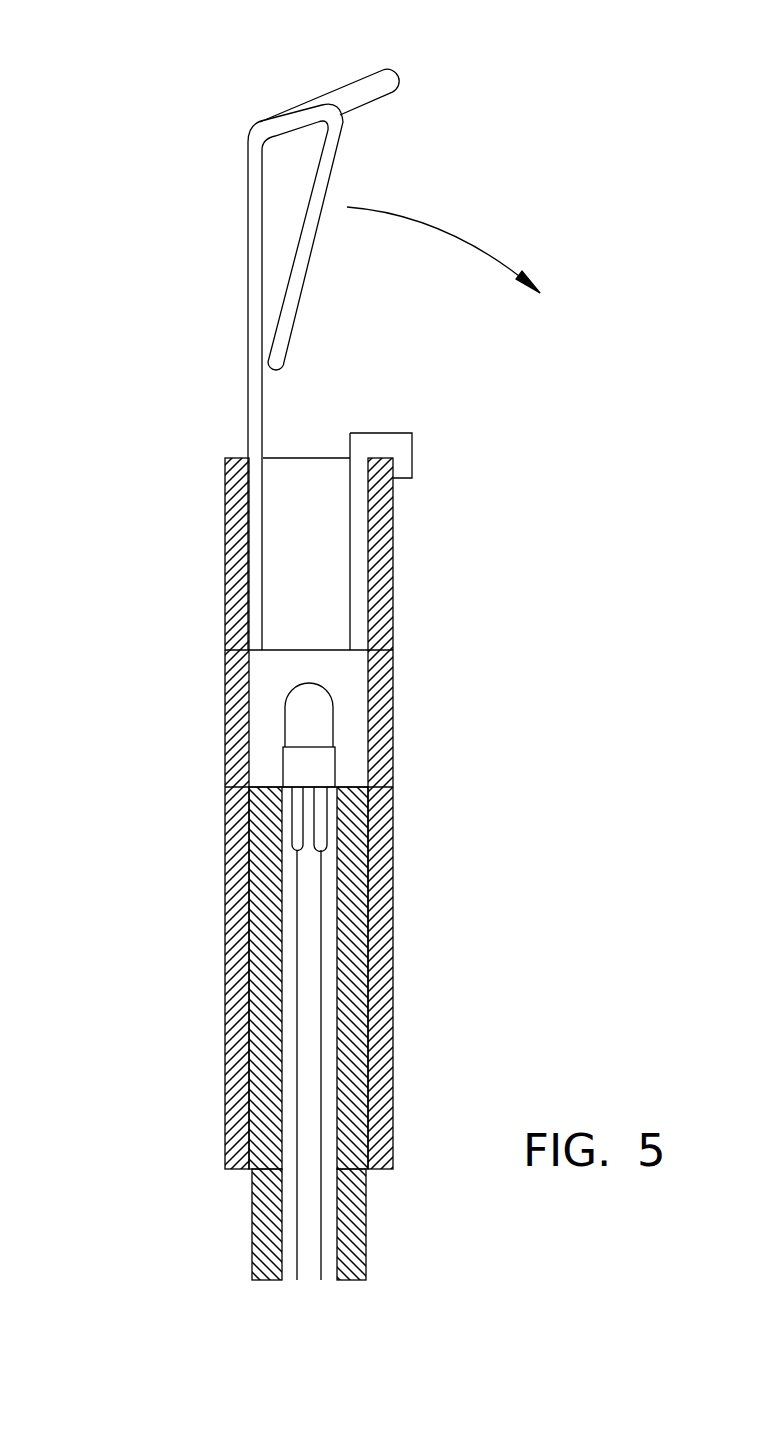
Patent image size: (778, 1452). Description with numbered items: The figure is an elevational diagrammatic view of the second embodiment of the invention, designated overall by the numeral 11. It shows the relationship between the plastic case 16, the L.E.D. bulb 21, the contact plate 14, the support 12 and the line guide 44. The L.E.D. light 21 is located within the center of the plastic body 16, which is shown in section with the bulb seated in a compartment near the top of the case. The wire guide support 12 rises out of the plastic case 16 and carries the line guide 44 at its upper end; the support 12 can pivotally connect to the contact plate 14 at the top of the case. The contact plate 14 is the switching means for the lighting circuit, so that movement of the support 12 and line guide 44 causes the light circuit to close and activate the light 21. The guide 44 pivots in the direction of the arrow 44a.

The second embodiment 11 is at (482, 693).
The support 12 is at (250, 208).
The contact plate 14 is at (412, 445).
The plastic body 16 is at (390, 865).
The L.E.D. light 21 is at (302, 737).
The line guide 44 is at (377, 92).
The arrow 44a is at (437, 223).